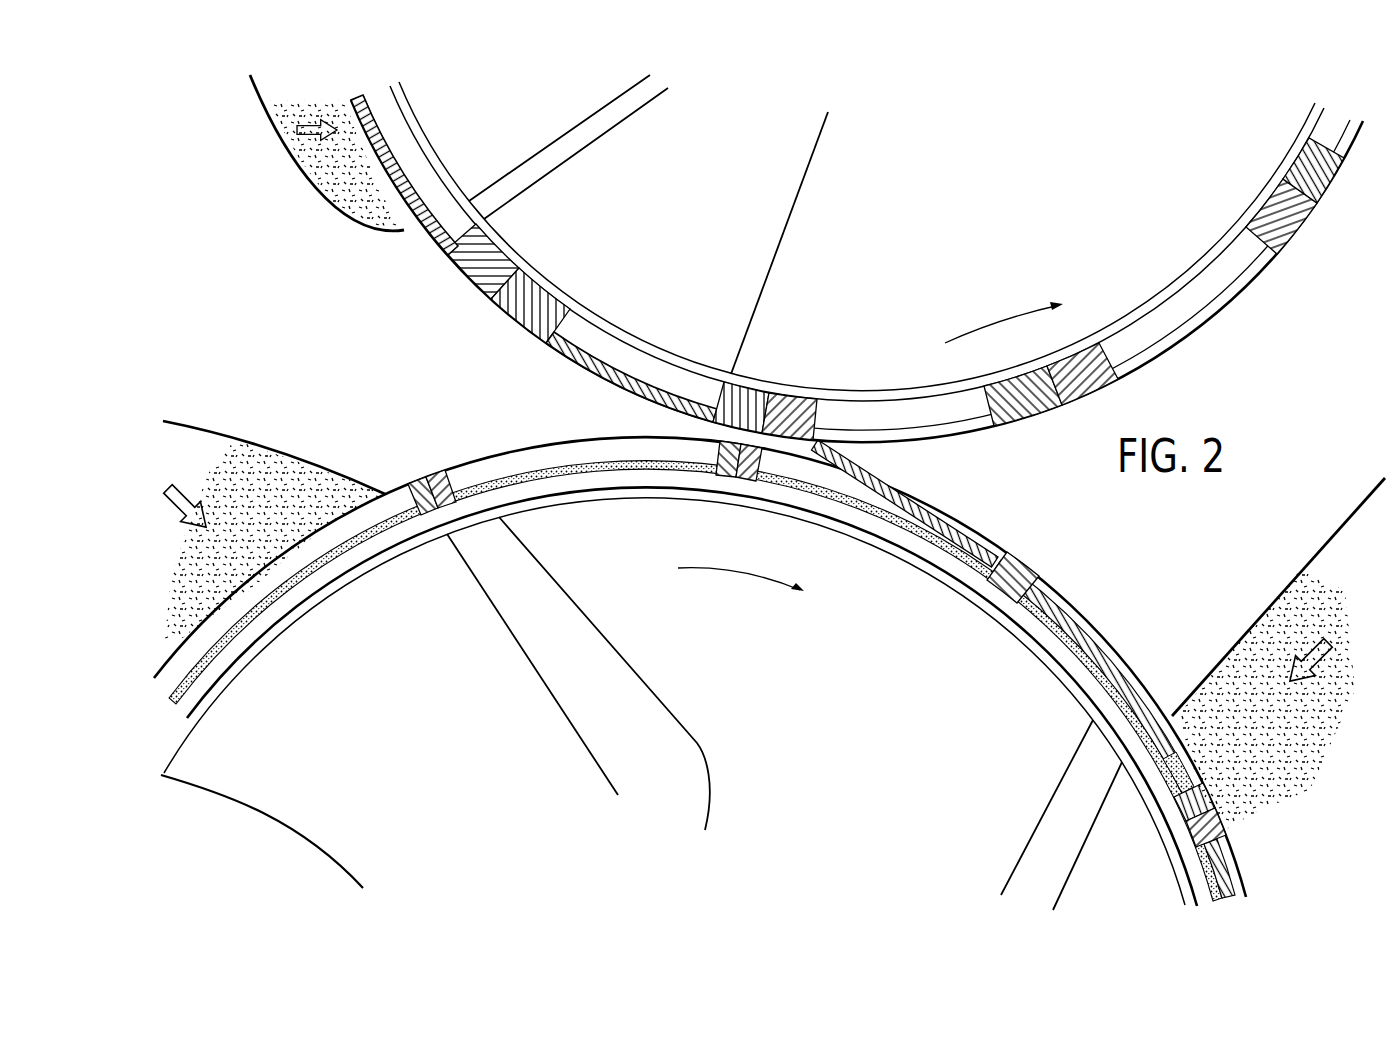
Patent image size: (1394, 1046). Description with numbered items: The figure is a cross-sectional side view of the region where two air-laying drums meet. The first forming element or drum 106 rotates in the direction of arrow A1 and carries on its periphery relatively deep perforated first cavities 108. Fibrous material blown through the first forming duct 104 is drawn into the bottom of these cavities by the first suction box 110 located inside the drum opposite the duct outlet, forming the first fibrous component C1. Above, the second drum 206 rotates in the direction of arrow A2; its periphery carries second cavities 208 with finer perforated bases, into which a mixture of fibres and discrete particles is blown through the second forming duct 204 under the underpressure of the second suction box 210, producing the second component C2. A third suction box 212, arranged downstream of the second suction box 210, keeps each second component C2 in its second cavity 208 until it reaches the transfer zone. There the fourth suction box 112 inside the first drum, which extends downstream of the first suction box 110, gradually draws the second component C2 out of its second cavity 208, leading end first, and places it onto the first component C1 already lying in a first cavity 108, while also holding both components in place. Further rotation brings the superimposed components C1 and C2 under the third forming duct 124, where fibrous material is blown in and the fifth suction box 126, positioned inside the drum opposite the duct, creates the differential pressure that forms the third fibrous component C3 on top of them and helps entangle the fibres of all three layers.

The first forming duct 104 is at (272, 452).
The first forming element (first drum) 106 is at (512, 503).
The first cavities 108 is at (394, 512).
The first suction box (first underpressure means) 110 is at (430, 769).
The fourth suction box 112 is at (859, 755).
The third forming duct 124 is at (1320, 547).
The fifth suction box (fifth underpressure generating means) 126 is at (1133, 852).
The second forming duct 204 is at (300, 172).
The second drum 206 is at (1202, 235).
The second cavities (forming cavities or moulds) 208 is at (547, 340).
The second suction box (second underpressure means) 210 is at (403, 227).
The third suction box (third underpressure source) 212 is at (770, 270).
The first fibrous component C1 is at (340, 555).
The second component C2 is at (427, 240).
The third fibrous component C3 is at (1178, 790).
The direction of rotation of the first drum A1 is at (697, 568).
The direction of rotation of the second drum A2 is at (962, 313).